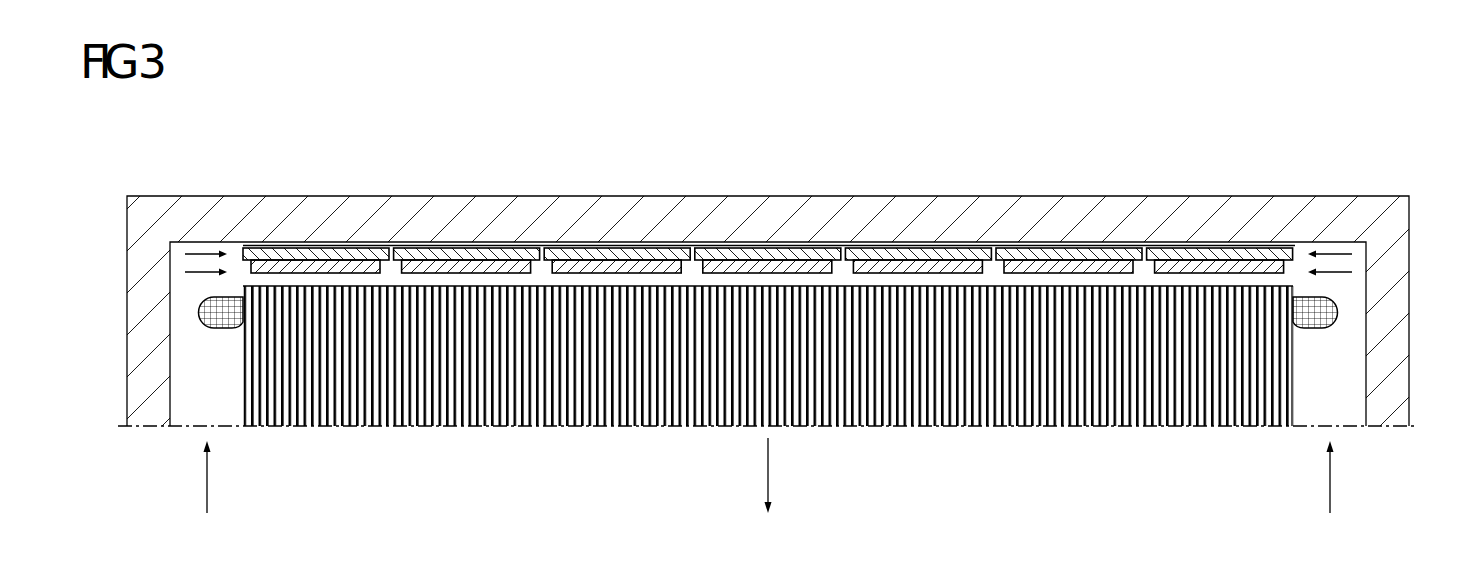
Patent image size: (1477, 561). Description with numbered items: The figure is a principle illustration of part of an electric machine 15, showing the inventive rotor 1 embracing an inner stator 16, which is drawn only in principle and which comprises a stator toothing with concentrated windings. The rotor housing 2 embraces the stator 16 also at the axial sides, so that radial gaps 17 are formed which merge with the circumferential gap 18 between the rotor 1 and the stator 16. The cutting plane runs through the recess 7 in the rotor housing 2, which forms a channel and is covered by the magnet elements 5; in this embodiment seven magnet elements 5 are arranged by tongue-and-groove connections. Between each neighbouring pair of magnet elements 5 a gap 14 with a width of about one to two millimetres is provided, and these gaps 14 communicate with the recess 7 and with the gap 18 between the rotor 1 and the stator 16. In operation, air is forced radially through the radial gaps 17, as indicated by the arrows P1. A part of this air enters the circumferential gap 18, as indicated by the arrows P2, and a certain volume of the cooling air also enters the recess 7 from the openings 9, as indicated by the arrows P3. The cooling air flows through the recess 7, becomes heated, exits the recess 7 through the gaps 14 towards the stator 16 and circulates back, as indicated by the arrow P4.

The rotor 1 is at (297, 184).
The rotor housing 2 is at (748, 210).
The magnet elements 5 is at (321, 253).
The recess 7 is at (432, 244).
The openings 9 is at (229, 243).
The gap 14 is at (390, 248).
The electric machine 15 is at (990, 72).
The stator 16 is at (358, 460).
The radial gaps 17 is at (186, 362).
The circumferential gap 18 is at (882, 277).
The arrows P1 is at (204, 478).
The arrows P2 is at (193, 277).
The arrows P3 is at (207, 252).
The arrow P4 is at (765, 475).